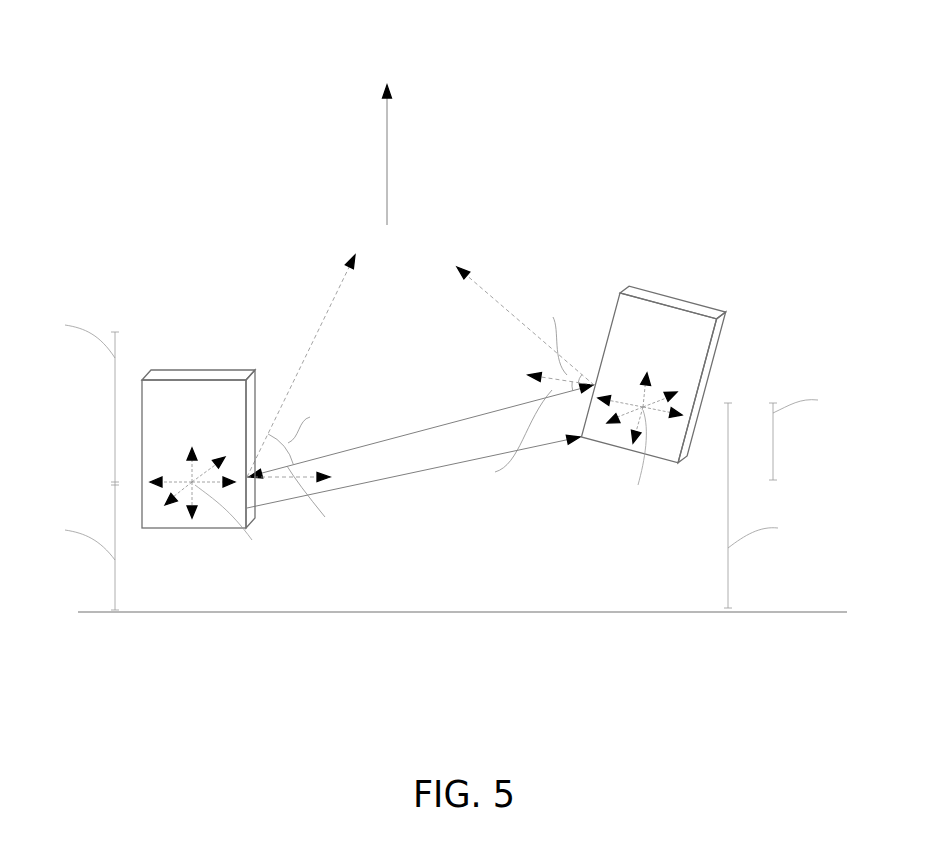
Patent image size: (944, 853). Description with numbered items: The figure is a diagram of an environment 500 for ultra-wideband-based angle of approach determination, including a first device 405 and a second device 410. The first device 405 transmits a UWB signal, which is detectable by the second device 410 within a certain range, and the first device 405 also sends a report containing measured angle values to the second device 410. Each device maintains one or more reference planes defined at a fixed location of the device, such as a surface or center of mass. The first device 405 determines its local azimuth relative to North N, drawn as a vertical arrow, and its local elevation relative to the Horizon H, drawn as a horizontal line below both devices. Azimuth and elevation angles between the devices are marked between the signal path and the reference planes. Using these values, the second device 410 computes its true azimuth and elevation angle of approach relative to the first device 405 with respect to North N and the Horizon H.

The environment 500 is at (73, 62).
The first device 405 is at (198, 367).
The second device 410 is at (682, 297).